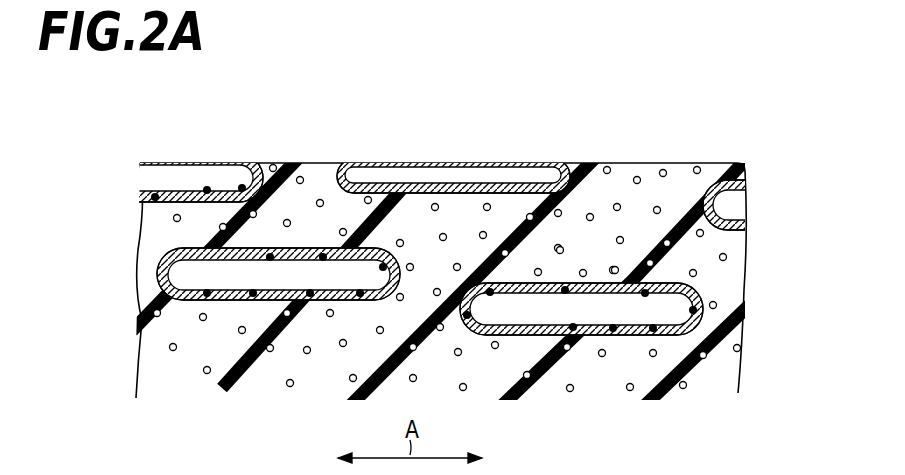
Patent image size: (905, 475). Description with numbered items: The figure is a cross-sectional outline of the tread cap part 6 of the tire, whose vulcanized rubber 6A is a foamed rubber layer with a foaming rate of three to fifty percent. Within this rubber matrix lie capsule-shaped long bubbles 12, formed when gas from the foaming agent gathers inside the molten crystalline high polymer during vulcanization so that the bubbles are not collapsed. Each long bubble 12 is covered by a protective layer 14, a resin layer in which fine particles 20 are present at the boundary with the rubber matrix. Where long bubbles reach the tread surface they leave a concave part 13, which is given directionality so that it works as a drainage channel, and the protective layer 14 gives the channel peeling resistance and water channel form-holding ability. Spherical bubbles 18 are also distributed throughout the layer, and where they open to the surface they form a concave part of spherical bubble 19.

The cap part 6 is at (793, 170).
The vulcanized rubber 6A is at (735, 263).
The long bubble 12 is at (200, 268).
The concave part 13 is at (233, 165).
The protective layer 14 is at (470, 187).
The spherical bubble 18 is at (318, 198).
The concave part of spherical bubble 19 is at (276, 165).
The fine particle 20 is at (330, 257).